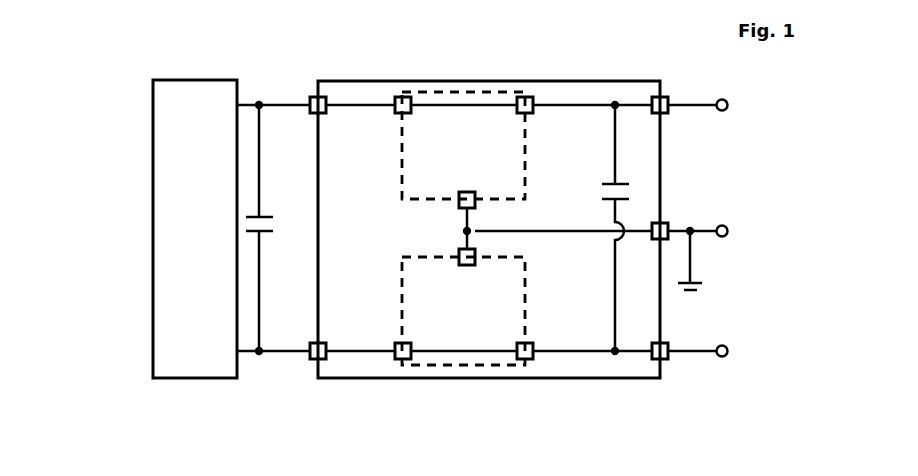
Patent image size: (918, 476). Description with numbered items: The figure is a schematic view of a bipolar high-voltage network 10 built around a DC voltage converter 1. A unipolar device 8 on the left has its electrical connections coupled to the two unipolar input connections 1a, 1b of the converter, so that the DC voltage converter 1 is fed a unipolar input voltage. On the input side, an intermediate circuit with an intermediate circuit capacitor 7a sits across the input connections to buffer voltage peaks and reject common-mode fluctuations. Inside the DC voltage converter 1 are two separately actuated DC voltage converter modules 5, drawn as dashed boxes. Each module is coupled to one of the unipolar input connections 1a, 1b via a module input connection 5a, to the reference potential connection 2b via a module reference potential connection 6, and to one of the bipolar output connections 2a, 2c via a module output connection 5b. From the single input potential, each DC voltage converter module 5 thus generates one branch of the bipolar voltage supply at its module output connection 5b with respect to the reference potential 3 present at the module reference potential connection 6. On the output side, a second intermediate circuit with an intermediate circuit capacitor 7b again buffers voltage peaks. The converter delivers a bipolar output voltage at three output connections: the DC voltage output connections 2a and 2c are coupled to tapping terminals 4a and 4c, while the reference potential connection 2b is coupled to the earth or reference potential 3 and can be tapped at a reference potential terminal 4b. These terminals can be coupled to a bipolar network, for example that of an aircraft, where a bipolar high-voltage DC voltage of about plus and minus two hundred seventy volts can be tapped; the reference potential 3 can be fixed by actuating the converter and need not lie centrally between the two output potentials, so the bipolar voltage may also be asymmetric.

The bipolar high-voltage network 10 is at (108, 55).
The unipolar device 8 is at (153, 291).
The DC voltage converter 1 is at (573, 80).
The input connection 1a is at (310, 101).
The input connection 1b is at (311, 358).
The DC voltage converter module 5 is at (449, 92).
The module input connection 5a is at (396, 112).
The module output connection 5b is at (533, 112).
The module reference potential connection 6 is at (475, 203).
The intermediate circuit capacitor 7a is at (264, 217).
The intermediate circuit capacitor 7b is at (624, 184).
The DC voltage output connection 2a is at (668, 113).
The reference potential connection 2b is at (668, 223).
The DC voltage output connection 2c is at (668, 359).
The tapping terminal 4a is at (728, 108).
The reference potential terminal 4b is at (728, 234).
The tapping terminal 4c is at (728, 354).
The reference potential 3 is at (704, 291).